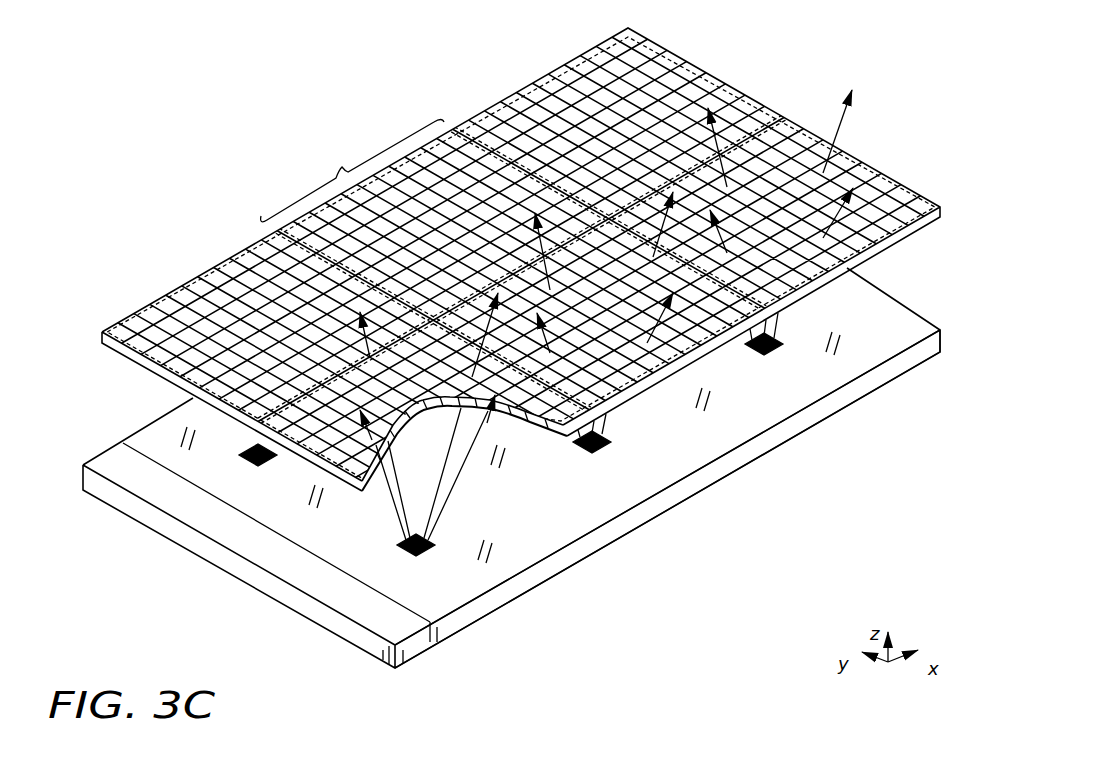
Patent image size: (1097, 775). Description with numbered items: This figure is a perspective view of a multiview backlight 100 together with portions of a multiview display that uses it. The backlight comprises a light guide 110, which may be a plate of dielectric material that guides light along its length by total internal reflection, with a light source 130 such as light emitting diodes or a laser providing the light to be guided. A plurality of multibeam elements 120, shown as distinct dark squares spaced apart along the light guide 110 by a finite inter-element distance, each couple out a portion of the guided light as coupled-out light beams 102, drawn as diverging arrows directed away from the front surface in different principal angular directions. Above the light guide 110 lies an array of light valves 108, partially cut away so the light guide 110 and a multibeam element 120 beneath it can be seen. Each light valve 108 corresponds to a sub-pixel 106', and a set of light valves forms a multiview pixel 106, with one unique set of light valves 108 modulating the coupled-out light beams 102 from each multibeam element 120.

The multiview backlight 100 is at (160, 402).
The coupled-out light beams 102 is at (870, 110).
The multiview pixel 106 is at (352, 171).
The sub-pixel 106' is at (175, 228).
The light valves 108 is at (780, 78).
The light guide 110 is at (713, 473).
The multibeam elements 120 is at (433, 557).
The light source 130 is at (223, 560).